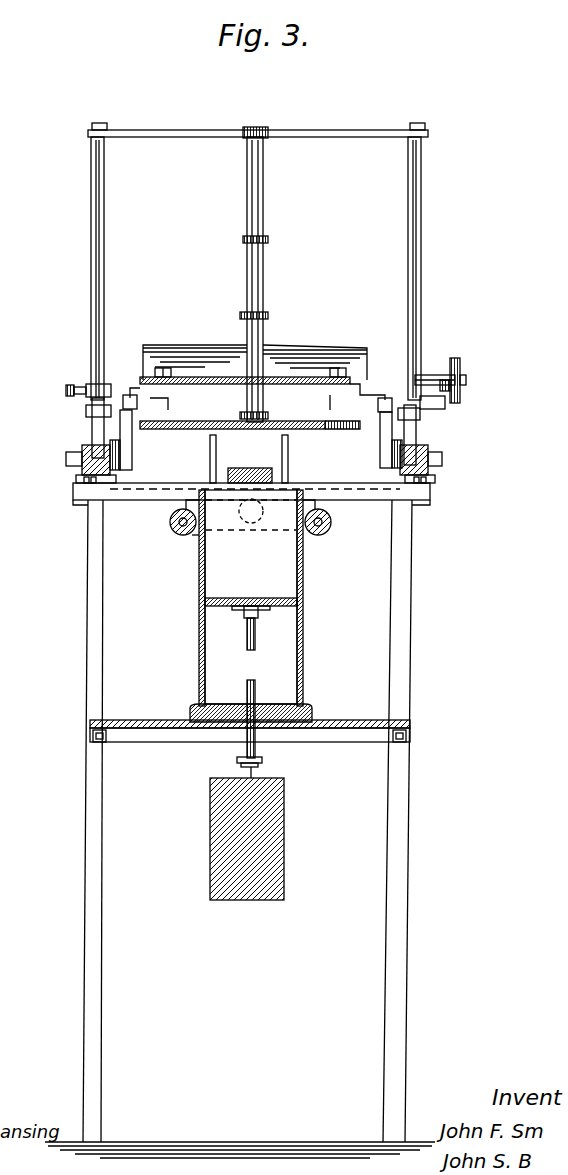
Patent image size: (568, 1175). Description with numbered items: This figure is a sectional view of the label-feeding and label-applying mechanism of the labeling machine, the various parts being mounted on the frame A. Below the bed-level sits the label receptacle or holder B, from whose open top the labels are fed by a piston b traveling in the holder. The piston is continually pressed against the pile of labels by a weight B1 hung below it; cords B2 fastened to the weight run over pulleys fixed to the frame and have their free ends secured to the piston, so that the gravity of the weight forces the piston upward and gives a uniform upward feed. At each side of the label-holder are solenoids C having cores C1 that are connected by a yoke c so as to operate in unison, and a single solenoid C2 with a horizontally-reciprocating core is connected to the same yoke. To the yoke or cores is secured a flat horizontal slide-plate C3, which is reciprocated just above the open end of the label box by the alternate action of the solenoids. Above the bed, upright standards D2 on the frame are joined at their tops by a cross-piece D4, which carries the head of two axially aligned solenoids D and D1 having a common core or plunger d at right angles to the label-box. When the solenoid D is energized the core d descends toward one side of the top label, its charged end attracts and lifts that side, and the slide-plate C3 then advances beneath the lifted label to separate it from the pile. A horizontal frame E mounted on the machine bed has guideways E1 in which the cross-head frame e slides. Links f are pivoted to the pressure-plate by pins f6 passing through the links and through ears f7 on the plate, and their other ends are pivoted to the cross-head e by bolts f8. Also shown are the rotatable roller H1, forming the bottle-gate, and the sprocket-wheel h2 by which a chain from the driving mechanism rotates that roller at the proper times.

The frame A is at (88, 822).
The label receptacle or holder B is at (298, 640).
The weight B1 is at (215, 852).
The cords B2 is at (262, 766).
The piston b is at (222, 606).
The solenoids C is at (178, 534).
The cores C1 is at (170, 520).
The single solenoid C2 is at (263, 523).
The slide-plate C3 is at (296, 490).
The yoke c is at (193, 537).
The solenoid D is at (247, 330).
The solenoid D1 is at (232, 208).
The upright standard D2 is at (91, 283).
The cross-piece D4 is at (164, 138).
The core or plunger d is at (247, 270).
The horizontal frame E is at (430, 490).
The horizontal guideways E1 is at (66, 445).
The cross-head frame e is at (116, 470).
The links f is at (86, 416).
The pins or bolts f6 is at (252, 399).
The ears f7 is at (372, 408).
The bolts or pins f8 is at (132, 436).
The rotatable roller H1 is at (352, 350).
The sprocket-wheel h2 is at (460, 364).